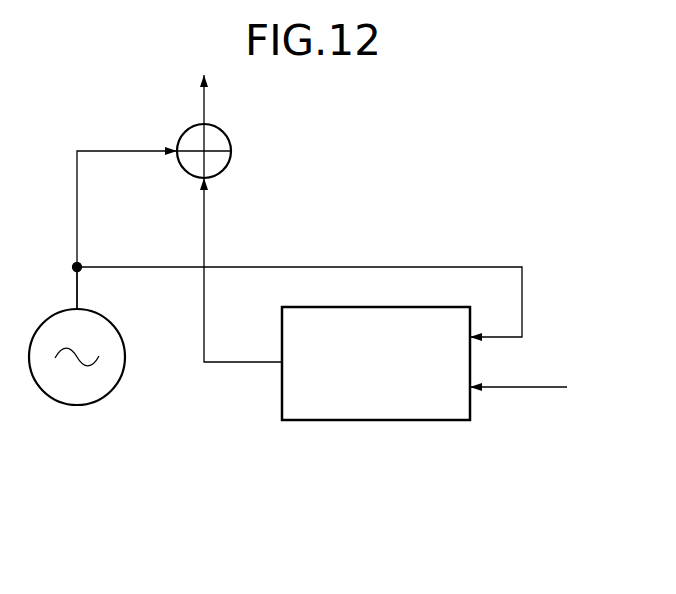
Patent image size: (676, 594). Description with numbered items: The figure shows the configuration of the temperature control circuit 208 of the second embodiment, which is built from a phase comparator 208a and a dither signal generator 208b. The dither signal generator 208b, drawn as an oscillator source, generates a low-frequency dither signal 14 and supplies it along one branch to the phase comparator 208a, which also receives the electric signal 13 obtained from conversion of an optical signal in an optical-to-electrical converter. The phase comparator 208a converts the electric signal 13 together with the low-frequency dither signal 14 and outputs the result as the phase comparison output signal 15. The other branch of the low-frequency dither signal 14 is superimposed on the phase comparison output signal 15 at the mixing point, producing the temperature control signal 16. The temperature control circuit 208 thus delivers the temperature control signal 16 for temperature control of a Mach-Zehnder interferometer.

The electric signal 13 is at (527, 390).
The low-frequency dither signal 14 is at (77, 213).
The phase comparison output signal 15 is at (237, 364).
The temperature control signal 16 is at (204, 100).
The temperature control circuit 208 is at (358, 175).
The phase comparator 208a is at (378, 421).
The dither signal generator 208b is at (93, 399).